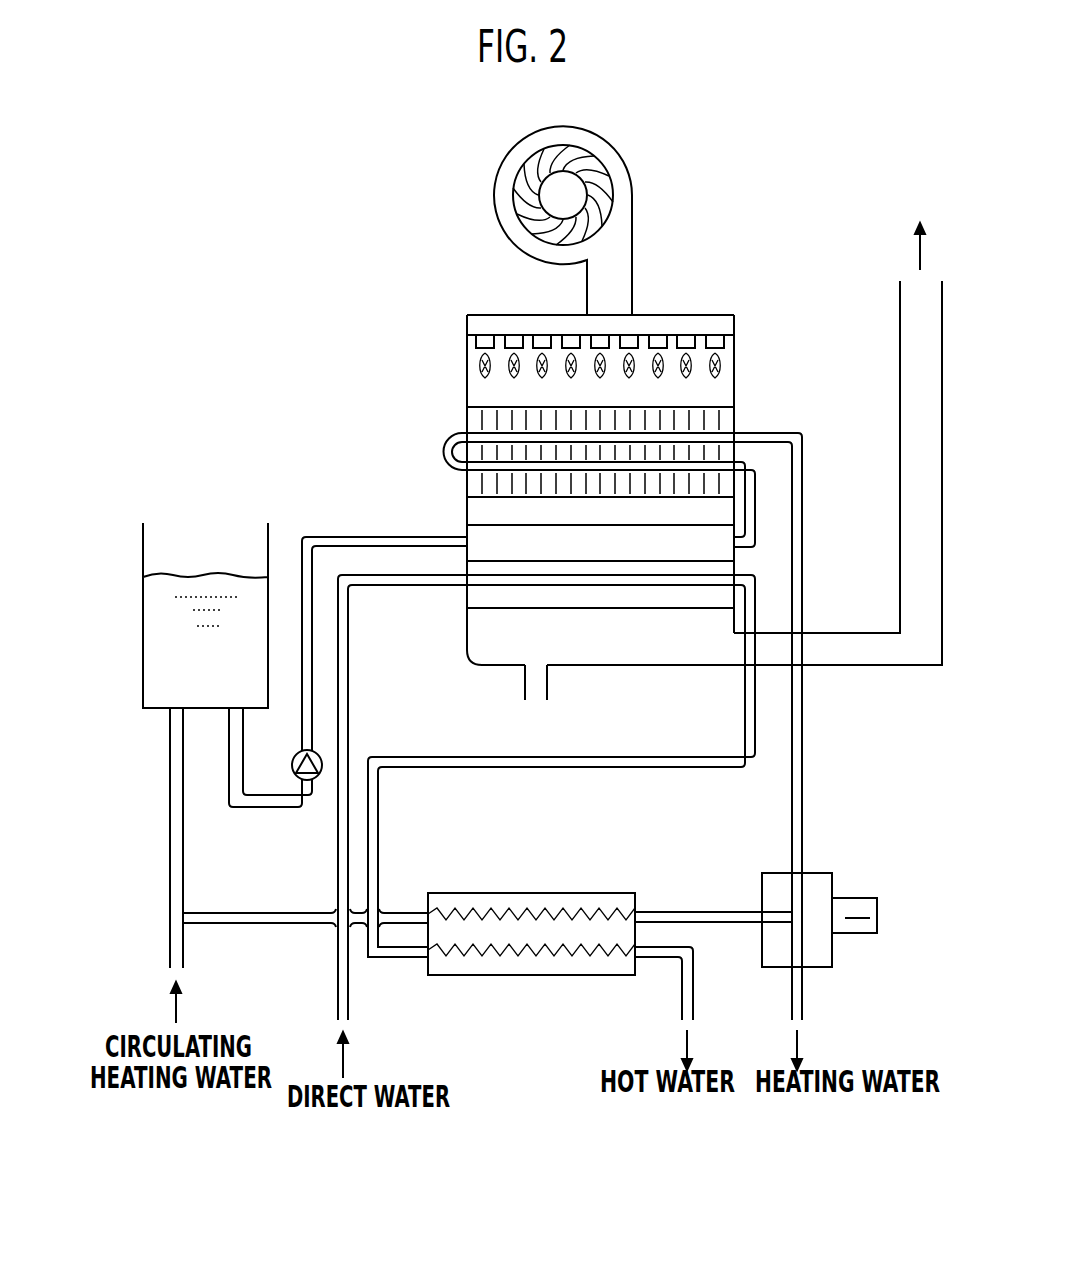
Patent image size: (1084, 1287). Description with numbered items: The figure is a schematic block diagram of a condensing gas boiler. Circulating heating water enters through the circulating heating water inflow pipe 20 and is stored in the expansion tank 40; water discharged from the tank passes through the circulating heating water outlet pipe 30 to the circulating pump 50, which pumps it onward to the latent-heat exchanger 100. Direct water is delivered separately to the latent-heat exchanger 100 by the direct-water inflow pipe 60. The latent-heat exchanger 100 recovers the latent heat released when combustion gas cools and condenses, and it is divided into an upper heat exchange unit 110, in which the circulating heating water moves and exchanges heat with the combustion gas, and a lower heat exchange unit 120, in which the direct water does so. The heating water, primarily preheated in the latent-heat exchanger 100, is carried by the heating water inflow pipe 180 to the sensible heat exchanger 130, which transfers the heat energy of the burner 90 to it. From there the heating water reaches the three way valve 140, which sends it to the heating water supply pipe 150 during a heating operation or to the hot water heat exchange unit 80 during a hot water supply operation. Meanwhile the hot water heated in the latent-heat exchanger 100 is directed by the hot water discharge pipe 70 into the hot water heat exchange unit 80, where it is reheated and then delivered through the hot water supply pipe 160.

The circulating heating water inflow pipe 20 is at (165, 832).
The circulating heating water outlet pipe 30 is at (300, 728).
The expansion tank 40 is at (143, 615).
The circulating pump 50 is at (293, 765).
The direct-water inflow pipe 60 is at (338, 852).
The hot water discharge pipe 70 is at (378, 825).
The hot water heat exchange unit 80 is at (618, 890).
The burner 90 is at (735, 337).
The latent-heat exchanger 100 is at (397, 468).
The upper heat exchange unit 110 is at (490, 547).
The lower heat exchange unit 120 is at (487, 593).
The sensible heat exchanger 130 is at (477, 417).
The three way valve 140 is at (813, 868).
The heating water supply pipe 150 is at (803, 988).
The hot water supply pipe 160 is at (680, 987).
The heating water inflow pipe 180 is at (756, 501).